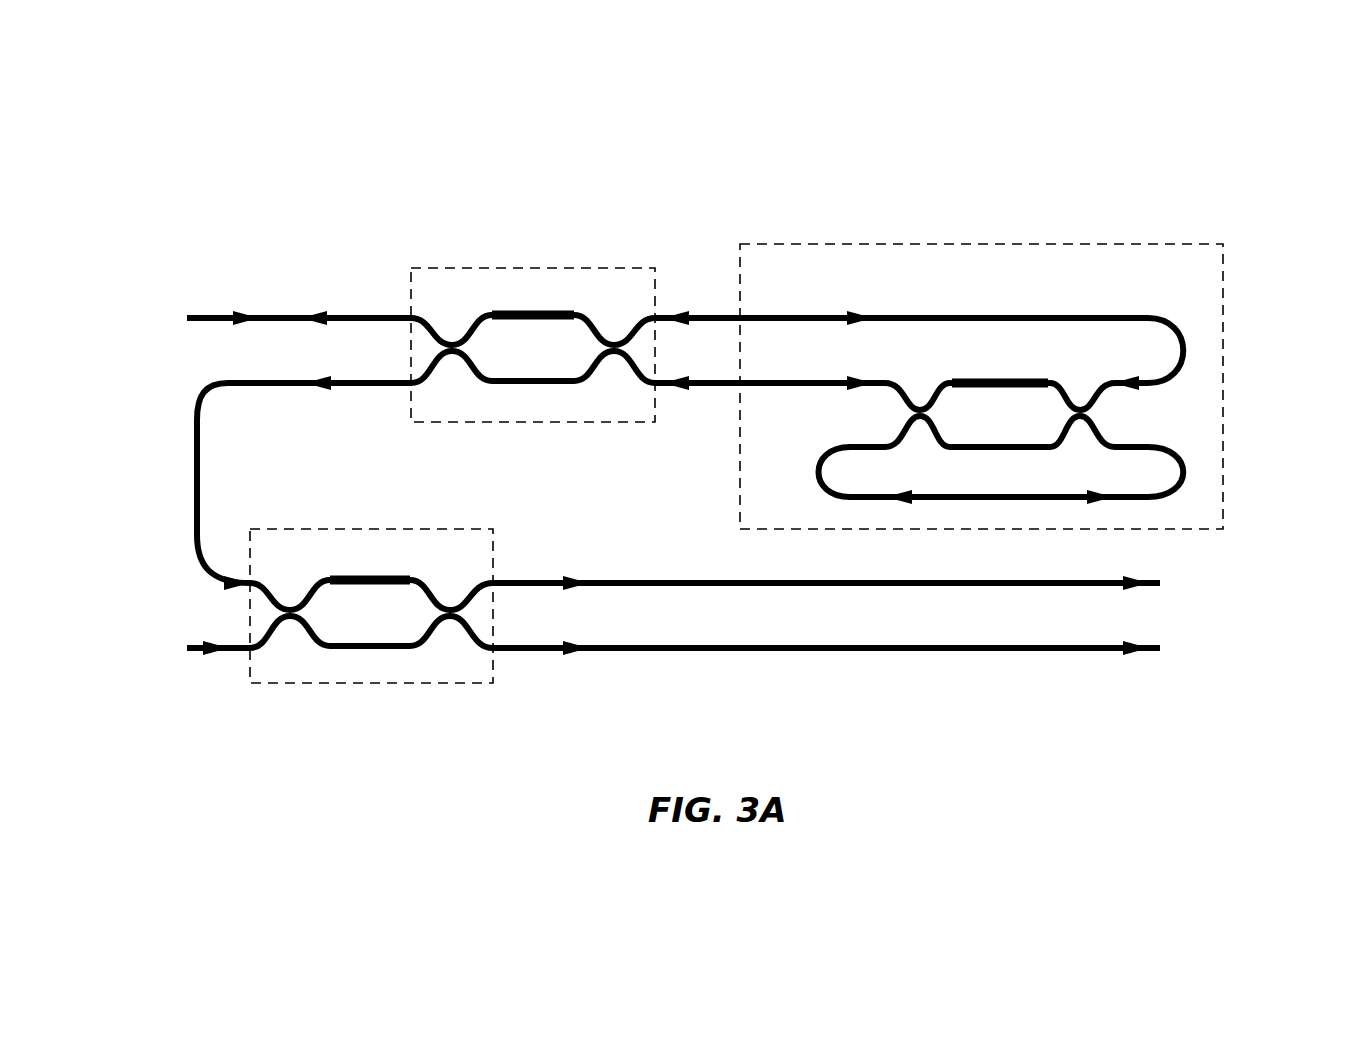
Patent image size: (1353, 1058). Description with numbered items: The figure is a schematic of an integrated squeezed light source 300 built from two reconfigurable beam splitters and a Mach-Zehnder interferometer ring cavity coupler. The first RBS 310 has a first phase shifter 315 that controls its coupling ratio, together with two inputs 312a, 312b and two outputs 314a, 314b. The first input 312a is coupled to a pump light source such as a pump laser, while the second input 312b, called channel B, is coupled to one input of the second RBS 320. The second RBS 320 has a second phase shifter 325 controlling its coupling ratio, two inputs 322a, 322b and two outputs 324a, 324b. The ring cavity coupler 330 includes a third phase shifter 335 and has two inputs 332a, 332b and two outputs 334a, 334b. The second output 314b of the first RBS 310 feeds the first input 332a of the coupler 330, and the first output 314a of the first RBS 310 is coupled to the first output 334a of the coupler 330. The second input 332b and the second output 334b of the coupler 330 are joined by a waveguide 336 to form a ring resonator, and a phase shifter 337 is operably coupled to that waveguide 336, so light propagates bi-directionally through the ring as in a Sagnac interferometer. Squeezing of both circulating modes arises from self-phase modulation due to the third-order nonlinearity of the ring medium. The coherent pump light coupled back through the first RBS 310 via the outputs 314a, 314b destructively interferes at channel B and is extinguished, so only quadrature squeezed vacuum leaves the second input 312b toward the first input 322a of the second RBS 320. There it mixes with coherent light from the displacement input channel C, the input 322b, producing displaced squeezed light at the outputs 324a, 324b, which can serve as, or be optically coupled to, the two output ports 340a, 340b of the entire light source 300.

The squeezed light source 300 is at (163, 262).
The first RBS 310 is at (570, 297).
The first input of the first RBS 312a is at (298, 306).
The second input of the first RBS 312b is at (304, 402).
The first output of the first RBS 314a is at (697, 304).
The second output of the first RBS 314b is at (697, 369).
The first phase shifter 315 is at (505, 300).
The second RBS 320 is at (405, 609).
The first input of the second RBS 322a is at (237, 565).
The second input of the second RBS 322b is at (260, 670).
The first output of the second RBS 324a is at (746, 569).
The second output of the second RBS 324b is at (746, 635).
The second phase shifter 325 is at (405, 565).
The MZIRCC 330 is at (1043, 362).
The first input of the MZIRCC 332a is at (830, 380).
The second input of the MZIRCC 332b is at (870, 456).
The first output of the MZIRCC 334a is at (1131, 364).
The second output of the MZIRCC 334b is at (1131, 456).
The third phase shifter 335 is at (962, 372).
The waveguide 336 is at (1097, 500).
The phase shifter 337 is at (999, 487).
The first output port 340a is at (1091, 572).
The second output port 340b is at (1091, 656).